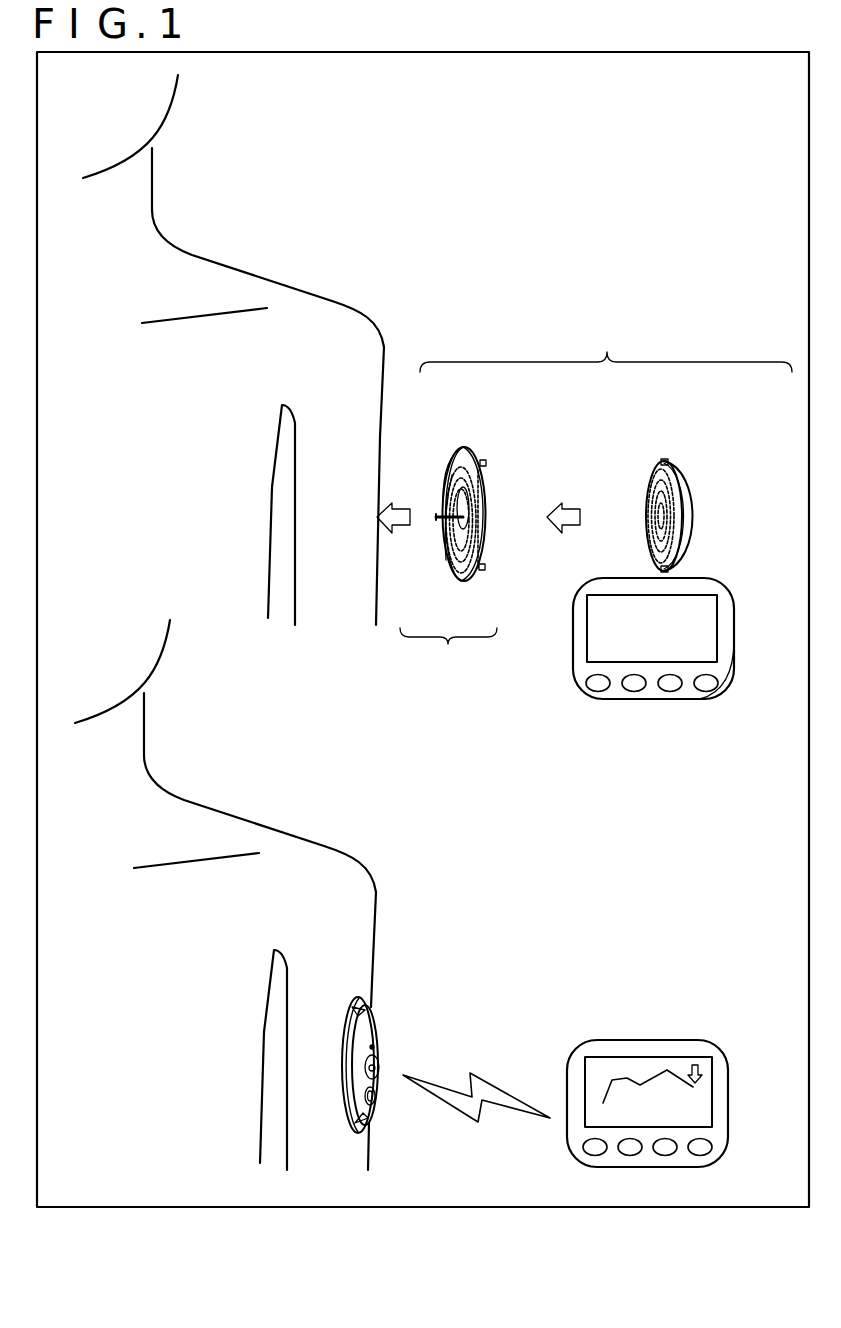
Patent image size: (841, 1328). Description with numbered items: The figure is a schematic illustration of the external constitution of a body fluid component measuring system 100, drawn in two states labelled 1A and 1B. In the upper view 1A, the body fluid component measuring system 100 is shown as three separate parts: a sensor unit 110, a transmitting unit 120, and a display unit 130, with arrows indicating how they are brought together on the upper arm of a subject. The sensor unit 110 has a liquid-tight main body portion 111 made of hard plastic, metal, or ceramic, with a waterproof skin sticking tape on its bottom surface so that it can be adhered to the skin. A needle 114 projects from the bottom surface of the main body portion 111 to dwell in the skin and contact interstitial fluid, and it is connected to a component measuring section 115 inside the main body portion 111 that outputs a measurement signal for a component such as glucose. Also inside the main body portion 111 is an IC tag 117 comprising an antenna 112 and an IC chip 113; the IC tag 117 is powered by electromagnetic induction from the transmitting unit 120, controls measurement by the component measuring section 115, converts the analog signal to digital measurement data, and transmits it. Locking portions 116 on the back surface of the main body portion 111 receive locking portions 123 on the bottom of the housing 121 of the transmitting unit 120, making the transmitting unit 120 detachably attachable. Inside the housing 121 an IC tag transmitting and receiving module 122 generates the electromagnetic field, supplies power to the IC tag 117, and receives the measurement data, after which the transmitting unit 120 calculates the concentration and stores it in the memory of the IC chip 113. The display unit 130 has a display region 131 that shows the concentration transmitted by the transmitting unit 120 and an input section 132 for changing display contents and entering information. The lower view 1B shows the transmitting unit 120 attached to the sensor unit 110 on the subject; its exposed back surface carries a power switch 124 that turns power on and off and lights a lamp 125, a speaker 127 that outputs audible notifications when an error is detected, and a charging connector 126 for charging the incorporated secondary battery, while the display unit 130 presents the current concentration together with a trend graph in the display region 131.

The body fluid component measuring system 100 is at (606, 346).
The sensor unit 110 is at (520, 460).
The main body portion 111 is at (465, 445).
The antenna 112 is at (462, 582).
The IC chip 113 is at (445, 548).
The needle 114 is at (438, 519).
The component measuring section 115 is at (470, 502).
The locking portions 116 is at (487, 463).
The IC tag 117 is at (448, 647).
The transmitting unit 120 is at (693, 460).
The housing 121 is at (693, 511).
The IC tag transmitting and receiving module 122 is at (651, 493).
The locking portions 123 is at (664, 460).
The power switch 124 is at (380, 1067).
The lamp 125 is at (375, 1047).
The charging connector 126 is at (368, 1118).
The speaker 127 is at (377, 1096).
The display unit 130 is at (724, 582).
The display region 131 is at (587, 625).
The input section 132 is at (724, 665).
The state before attachment 1A is at (143, 433).
The state with transmitting unit attached 1B is at (135, 1005).